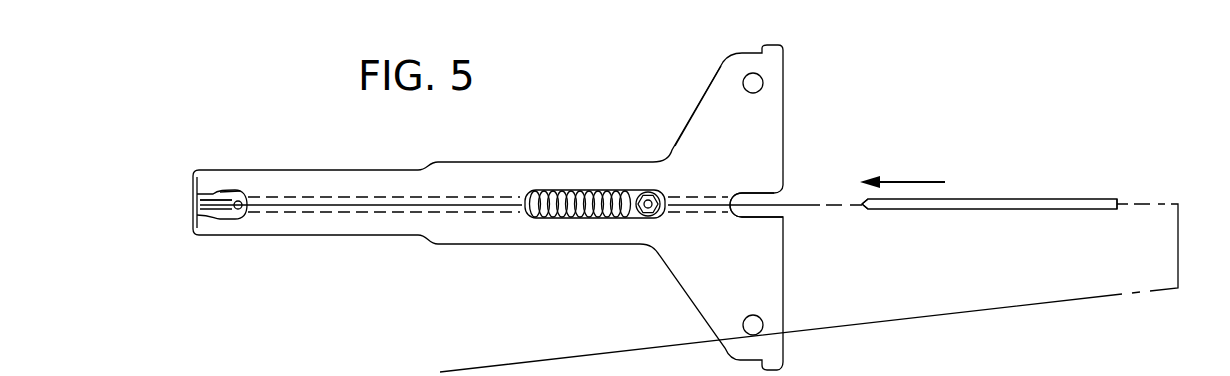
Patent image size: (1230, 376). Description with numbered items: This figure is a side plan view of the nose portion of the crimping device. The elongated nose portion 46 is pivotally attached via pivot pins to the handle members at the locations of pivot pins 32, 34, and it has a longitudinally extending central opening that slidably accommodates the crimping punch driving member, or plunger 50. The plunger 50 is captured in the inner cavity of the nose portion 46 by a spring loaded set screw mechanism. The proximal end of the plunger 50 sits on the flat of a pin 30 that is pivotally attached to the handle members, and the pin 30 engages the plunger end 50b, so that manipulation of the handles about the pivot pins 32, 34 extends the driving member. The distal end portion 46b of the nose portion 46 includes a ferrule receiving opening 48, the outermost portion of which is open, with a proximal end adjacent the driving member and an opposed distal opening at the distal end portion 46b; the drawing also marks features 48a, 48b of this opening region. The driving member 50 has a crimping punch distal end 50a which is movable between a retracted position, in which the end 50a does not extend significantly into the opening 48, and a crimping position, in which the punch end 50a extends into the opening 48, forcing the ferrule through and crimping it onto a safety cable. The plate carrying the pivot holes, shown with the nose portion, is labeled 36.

The pin 30 is at (754, 206).
The pivot pin 32 is at (755, 87).
The pivot pin 34 is at (756, 326).
The mounting plate 36 is at (708, 117).
The elongated nose portion 46 is at (528, 179).
The distal end portion 46b is at (213, 184).
The ferrule receiving opening 48 is at (224, 212).
The clip upper arm 48a is at (243, 195).
The clip slot 48b is at (208, 196).
The plunger 50 is at (972, 199).
The crimping punch distal end 50a is at (865, 211).
The plunger end 50b is at (1120, 203).